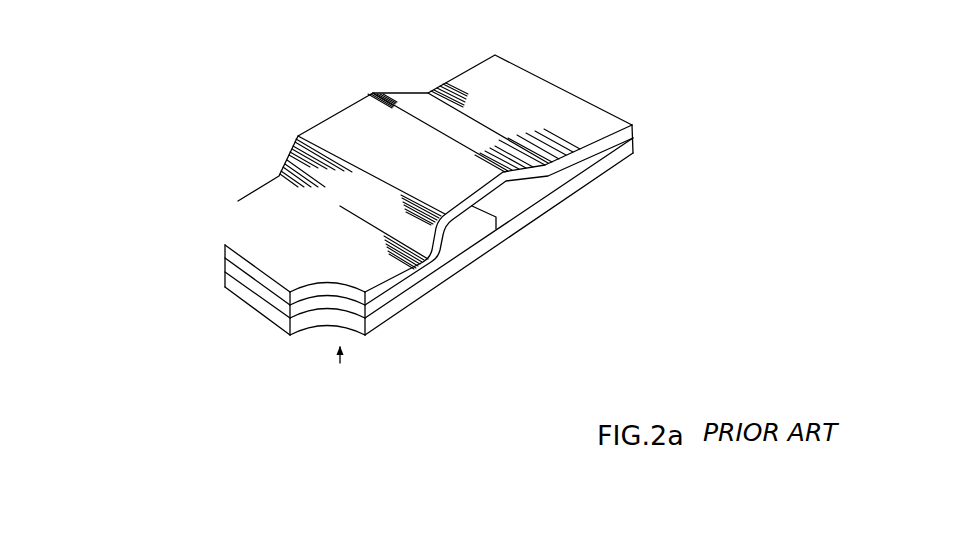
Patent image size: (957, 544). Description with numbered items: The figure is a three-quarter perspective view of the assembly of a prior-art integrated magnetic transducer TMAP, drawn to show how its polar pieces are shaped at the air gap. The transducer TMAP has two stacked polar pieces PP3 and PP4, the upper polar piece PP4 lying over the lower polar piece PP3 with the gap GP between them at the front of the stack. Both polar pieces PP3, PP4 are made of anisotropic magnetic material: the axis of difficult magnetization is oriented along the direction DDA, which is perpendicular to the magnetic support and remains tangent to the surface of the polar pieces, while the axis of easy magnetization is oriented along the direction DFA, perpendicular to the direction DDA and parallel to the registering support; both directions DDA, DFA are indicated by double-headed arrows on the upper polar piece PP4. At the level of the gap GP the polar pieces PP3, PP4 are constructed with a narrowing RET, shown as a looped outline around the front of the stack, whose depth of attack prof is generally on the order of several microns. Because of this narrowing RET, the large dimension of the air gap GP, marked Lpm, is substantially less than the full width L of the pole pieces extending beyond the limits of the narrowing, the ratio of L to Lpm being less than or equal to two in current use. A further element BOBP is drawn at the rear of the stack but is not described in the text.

The polar piece PP4 is at (356, 101).
The polar piece PP3 is at (604, 170).
The gap GP is at (285, 315).
The back of pole block BOBP is at (471, 239).
The transducer TMAP is at (328, 330).
The narrowing RET is at (328, 330).
The full width of the pole pieces L is at (378, 287).
The large dimension of the air gap Lpm is at (225, 245).
The depth of attack prof is at (328, 328).
The direction of easy magnetization DFA is at (377, 135).
The direction of difficult magnetization DDA is at (553, 92).